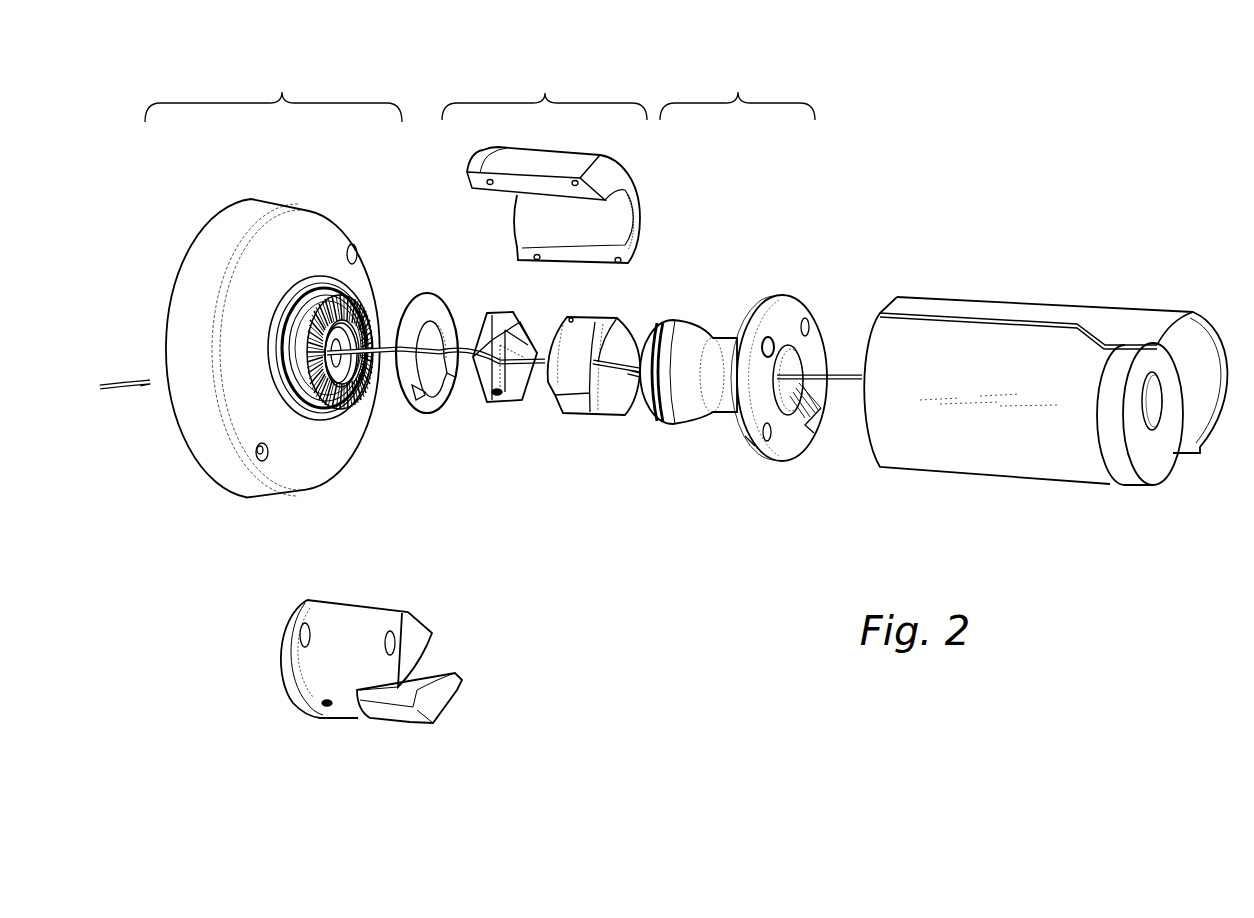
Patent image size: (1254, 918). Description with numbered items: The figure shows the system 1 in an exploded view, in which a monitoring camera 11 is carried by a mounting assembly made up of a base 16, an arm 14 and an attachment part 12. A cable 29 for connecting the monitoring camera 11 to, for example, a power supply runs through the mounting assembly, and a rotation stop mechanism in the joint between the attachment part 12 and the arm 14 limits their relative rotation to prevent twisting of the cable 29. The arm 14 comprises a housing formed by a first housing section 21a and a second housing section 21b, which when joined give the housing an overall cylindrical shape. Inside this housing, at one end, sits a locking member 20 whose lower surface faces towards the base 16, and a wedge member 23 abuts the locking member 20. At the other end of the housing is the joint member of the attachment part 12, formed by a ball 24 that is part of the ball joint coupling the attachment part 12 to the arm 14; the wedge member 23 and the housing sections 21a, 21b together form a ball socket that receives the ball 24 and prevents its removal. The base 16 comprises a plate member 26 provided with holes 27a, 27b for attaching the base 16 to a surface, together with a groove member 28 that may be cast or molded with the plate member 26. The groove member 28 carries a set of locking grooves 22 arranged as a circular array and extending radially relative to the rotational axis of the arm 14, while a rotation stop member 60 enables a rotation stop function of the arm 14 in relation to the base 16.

The system 1 is at (878, 78).
The monitoring camera 11 is at (1010, 457).
The attachment part 12 is at (737, 91).
The arm 14 is at (544, 92).
The base 16 is at (273, 91).
The locking member 20 is at (497, 400).
The first housing section 21a is at (342, 693).
The second housing section 21b is at (532, 158).
The locking grooves 22 is at (363, 405).
The wedge member 23 is at (597, 407).
The ball 24 is at (695, 402).
The plate member 26 is at (212, 470).
The hole 27a is at (357, 251).
The hole 27b is at (268, 456).
The groove member 28 is at (313, 405).
The cable 29 is at (843, 382).
The rotation stop member 60 is at (447, 400).